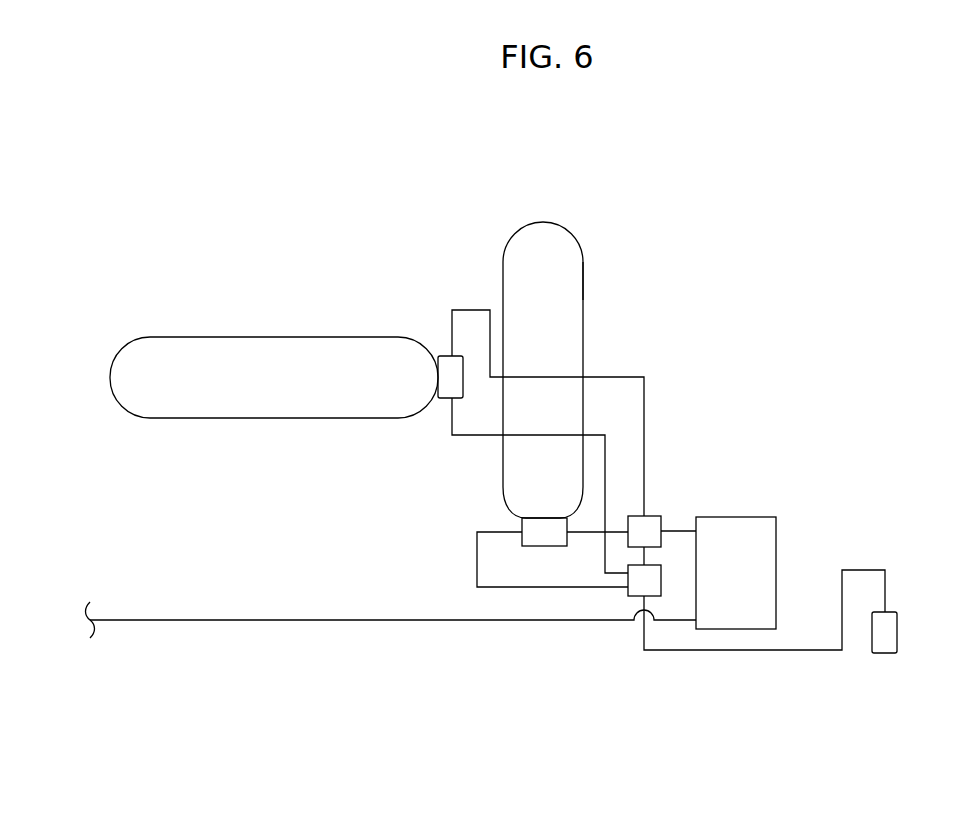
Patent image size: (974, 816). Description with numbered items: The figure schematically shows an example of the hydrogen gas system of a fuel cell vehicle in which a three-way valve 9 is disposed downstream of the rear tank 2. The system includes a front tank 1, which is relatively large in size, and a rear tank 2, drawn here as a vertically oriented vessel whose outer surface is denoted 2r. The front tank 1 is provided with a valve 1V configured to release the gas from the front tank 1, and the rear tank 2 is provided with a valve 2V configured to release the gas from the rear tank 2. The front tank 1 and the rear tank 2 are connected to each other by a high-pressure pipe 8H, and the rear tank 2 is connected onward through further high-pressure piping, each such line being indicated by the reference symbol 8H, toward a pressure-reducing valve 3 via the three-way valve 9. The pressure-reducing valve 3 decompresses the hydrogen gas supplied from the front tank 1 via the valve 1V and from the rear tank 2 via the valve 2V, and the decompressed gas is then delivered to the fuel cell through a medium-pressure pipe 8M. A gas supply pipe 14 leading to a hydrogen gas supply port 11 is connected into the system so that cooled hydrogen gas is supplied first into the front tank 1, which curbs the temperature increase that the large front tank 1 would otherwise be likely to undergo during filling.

The front tank 1 is at (255, 340).
The valve 1V is at (447, 356).
The rear tank 2 is at (538, 243).
The tank outer surface 2r is at (592, 287).
The high-pressure pipe 8H is at (617, 373).
The valve 2V is at (541, 548).
The three-way valve 9 is at (661, 514).
The pressure-reducing valve 3 is at (778, 555).
The medium-pressure pipe 8M is at (295, 622).
The gas supply pipe 14 is at (733, 652).
The hydrogen gas supply port 11 is at (885, 652).